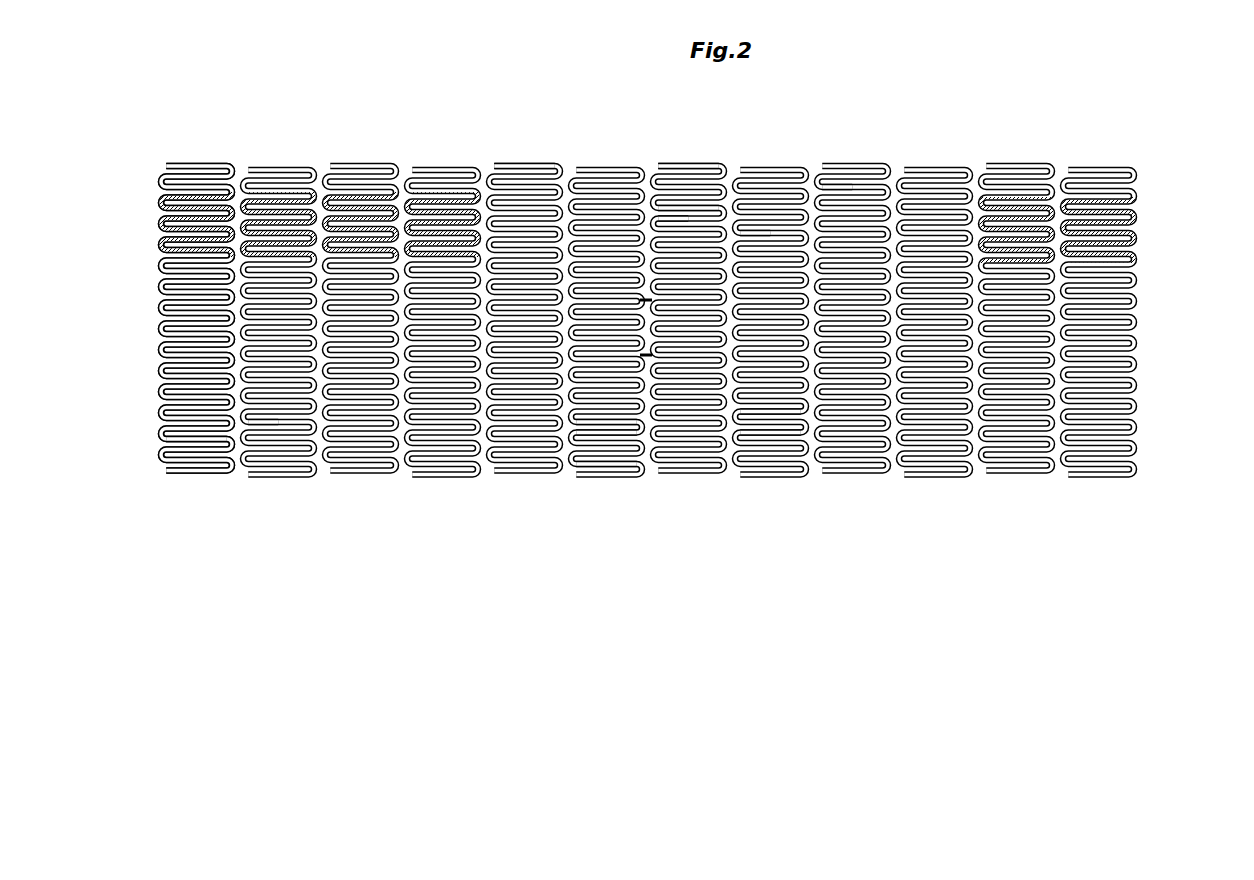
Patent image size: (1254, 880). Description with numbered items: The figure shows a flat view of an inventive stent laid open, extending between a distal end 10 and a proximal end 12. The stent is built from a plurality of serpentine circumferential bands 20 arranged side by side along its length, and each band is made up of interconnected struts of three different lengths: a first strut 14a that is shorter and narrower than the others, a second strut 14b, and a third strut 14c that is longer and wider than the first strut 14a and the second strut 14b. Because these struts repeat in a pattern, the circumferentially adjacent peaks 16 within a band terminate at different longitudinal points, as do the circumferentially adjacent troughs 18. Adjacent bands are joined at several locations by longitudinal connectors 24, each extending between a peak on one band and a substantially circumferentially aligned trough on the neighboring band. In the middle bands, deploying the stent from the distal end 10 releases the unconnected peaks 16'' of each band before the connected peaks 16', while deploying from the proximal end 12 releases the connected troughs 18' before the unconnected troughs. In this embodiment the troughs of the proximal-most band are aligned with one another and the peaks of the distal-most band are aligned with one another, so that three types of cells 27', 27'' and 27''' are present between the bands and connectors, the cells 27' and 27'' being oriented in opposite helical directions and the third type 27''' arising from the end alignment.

The distal end 10 is at (1147, 453).
The proximal end 12 is at (152, 257).
The first strut 14a is at (603, 421).
The second strut 14b is at (600, 431).
The third strut 14c is at (557, 461).
The peaks 16 is at (688, 166).
The connected peaks 16' is at (770, 462).
The unconnected peaks 16'' is at (474, 475).
The troughs 18 is at (693, 177).
The connected troughs 18' is at (790, 177).
The serpentine circumferential band 20 is at (593, 170).
The longitudinal connector 24 is at (645, 294).
The cell 27' is at (647, 297).
The cell 27'' is at (647, 295).
The cell 27''' is at (647, 300).